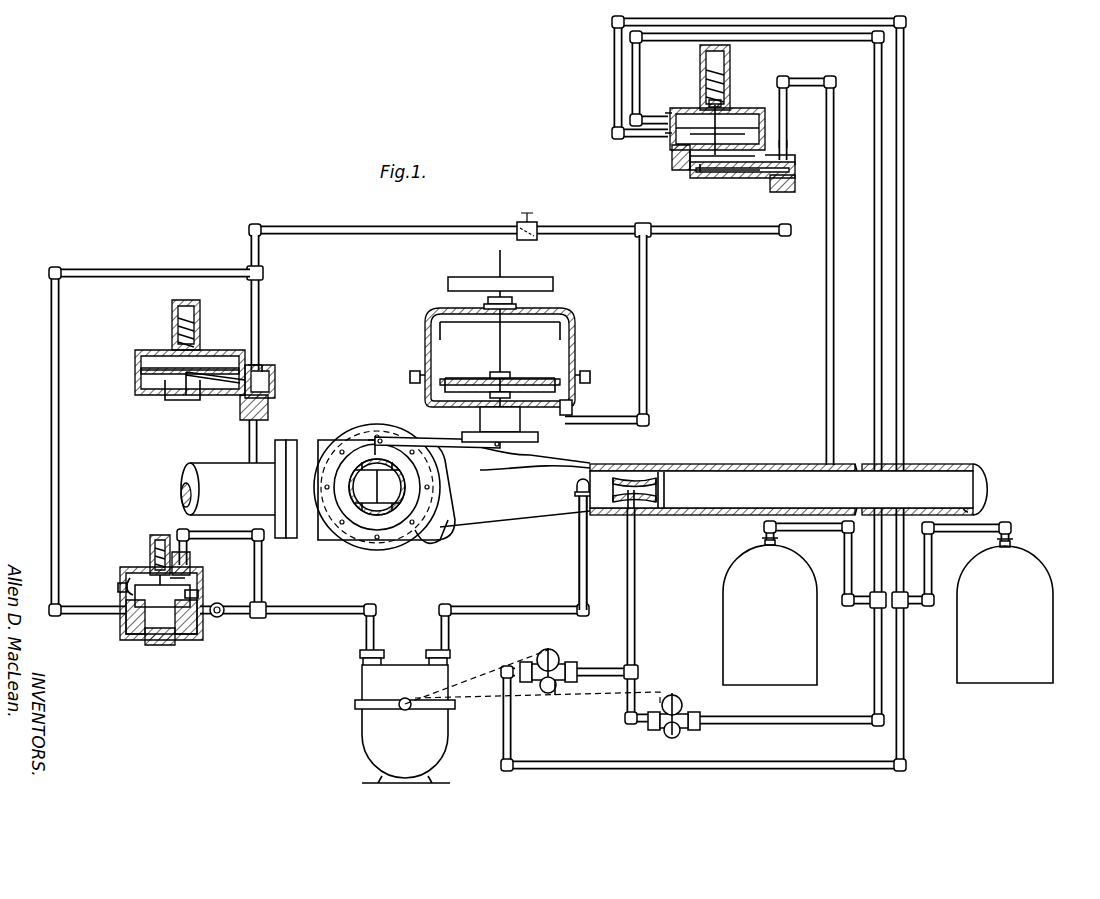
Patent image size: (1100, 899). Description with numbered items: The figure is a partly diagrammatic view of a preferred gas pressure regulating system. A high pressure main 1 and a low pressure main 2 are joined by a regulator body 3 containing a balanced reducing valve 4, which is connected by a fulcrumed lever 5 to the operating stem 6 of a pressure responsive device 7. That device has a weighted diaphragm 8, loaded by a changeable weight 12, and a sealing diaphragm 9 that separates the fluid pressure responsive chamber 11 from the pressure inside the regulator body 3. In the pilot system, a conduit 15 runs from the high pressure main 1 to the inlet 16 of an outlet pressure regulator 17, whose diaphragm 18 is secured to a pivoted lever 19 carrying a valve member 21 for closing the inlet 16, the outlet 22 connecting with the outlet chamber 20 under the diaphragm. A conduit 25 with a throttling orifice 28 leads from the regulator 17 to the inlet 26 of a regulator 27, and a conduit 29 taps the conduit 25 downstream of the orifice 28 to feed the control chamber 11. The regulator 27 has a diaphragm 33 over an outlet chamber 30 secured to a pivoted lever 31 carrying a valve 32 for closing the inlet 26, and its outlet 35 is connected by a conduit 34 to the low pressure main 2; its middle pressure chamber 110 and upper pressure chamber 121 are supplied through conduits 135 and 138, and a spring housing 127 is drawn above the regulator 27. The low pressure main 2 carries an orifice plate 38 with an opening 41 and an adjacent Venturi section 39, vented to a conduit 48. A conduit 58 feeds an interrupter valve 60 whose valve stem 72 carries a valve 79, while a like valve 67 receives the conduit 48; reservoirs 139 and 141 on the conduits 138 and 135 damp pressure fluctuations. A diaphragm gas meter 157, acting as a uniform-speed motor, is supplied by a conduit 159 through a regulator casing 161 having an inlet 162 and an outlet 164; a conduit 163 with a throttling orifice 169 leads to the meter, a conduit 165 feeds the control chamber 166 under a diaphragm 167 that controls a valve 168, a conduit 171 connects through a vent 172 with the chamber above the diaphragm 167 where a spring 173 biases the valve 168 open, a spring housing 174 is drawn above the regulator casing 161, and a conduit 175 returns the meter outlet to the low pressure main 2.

The high pressure main 1 is at (222, 462).
The low pressure main 2 is at (768, 465).
The regulator body 3 is at (530, 510).
The reducing valve 4 is at (382, 512).
The fulcrumed lever 5 is at (482, 446).
The operating stem 6 is at (462, 418).
The pressure responsive device 7 is at (425, 350).
The diaphragm 8 is at (556, 362).
The sealing diaphragm 9 is at (422, 388).
The fluid pressure responsive chamber 11 is at (574, 400).
The weight 12 is at (470, 288).
The conduit 15 is at (260, 440).
The inlet 16 is at (270, 408).
The outlet pressure regulator 17 is at (158, 392).
The diaphragm 18 is at (200, 365).
The pivoted lever 19 is at (208, 392).
The outlet chamber 20 is at (172, 400).
The valve member 21 is at (270, 378).
The outlet 22 is at (265, 365).
The conduit 25 is at (260, 312).
The inlet 26 is at (775, 185).
The regulator 27 is at (692, 162).
The throttling orifice 28 is at (540, 225).
The conduit 29 is at (648, 270).
The outlet chamber 30 is at (703, 170).
The pivoted lever 31 is at (740, 170).
The valve 32 is at (795, 172).
The diaphragm 33 is at (678, 155).
The conduit 34 is at (833, 100).
The outlet 35 is at (788, 148).
The orifice plate 38 is at (650, 470).
The Venturi section 39 is at (634, 508).
The opening 41 is at (664, 500).
The conduit 48 is at (640, 562).
The conduit 58 is at (618, 563).
The interrupter valve 60 is at (567, 696).
The valve 67 is at (668, 732).
The valve stem 72 is at (552, 655).
The valve 79 is at (545, 688).
The middle pressure chamber 110 is at (728, 125).
The upper pressure chamber 121 is at (672, 110).
The spring housing 127 is at (700, 75).
The conduit 135 is at (645, 137).
The conduit 138 is at (655, 118).
The reservoir 139 is at (725, 604).
The reservoir 141 is at (1032, 570).
The diaphragm gas meter 157 is at (368, 722).
The conduit 159 is at (52, 361).
The regulator casing 161 is at (122, 596).
The inlet 162 is at (128, 622).
The conduit 163 is at (332, 612).
The outlet 164 is at (180, 640).
The conduit 165 is at (196, 595).
The control chamber 166 is at (118, 586).
The diaphragm 167 is at (133, 580).
The valve 168 is at (155, 645).
The throttling orifice 169 is at (220, 618).
The conduit 171 is at (263, 582).
The vent 172 is at (190, 562).
The spring 173 is at (187, 578).
The spring 174 is at (150, 545).
The conduit 175 is at (518, 612).